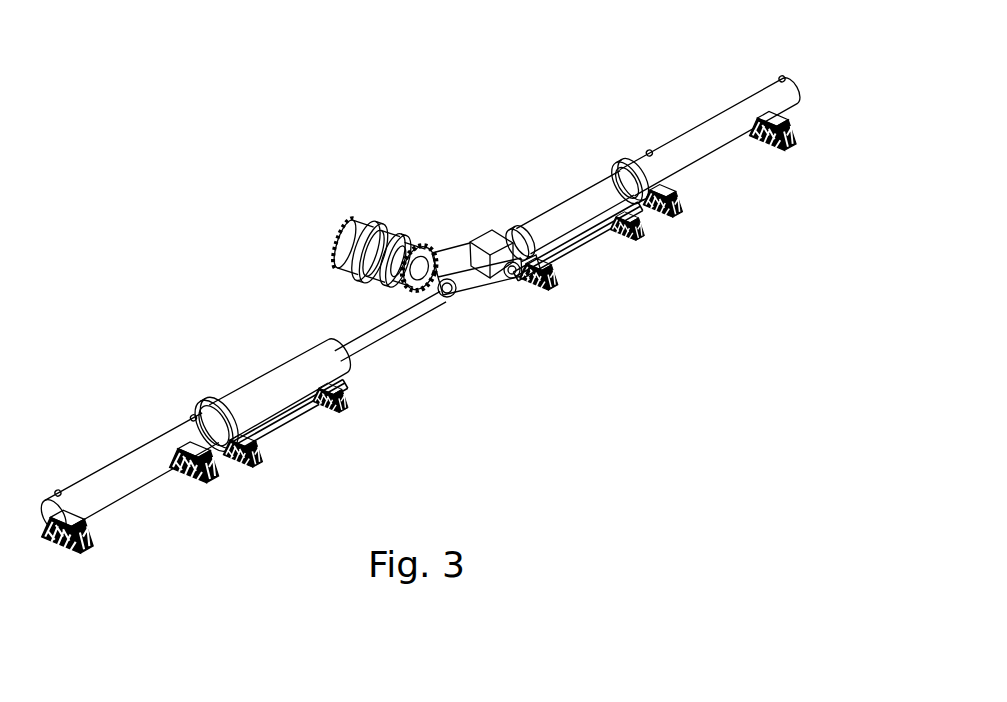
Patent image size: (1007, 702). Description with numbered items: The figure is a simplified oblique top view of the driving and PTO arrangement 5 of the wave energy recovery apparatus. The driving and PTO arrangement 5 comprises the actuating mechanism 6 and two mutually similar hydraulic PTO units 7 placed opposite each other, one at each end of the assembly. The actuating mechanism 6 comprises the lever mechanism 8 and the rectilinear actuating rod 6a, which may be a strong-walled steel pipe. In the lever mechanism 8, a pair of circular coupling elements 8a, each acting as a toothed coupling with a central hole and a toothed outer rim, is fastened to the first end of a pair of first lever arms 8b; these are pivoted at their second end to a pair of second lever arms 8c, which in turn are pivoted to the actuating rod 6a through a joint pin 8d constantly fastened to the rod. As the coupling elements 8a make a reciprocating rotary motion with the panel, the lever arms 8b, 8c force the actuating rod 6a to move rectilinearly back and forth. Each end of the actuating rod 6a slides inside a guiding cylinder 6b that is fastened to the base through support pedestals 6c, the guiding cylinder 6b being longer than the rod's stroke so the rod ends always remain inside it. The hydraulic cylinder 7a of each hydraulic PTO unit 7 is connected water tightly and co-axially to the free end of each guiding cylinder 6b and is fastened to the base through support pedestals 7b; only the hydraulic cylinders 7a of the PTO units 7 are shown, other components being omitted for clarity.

The driving and PTO arrangement 5 is at (288, 160).
The actuating mechanism 6 is at (436, 188).
The actuating rod 6a is at (350, 325).
The guiding cylinder 6b is at (581, 198).
The support pedestal 6c is at (343, 412).
The hydraulic PTO unit 7 is at (678, 82).
The hydraulic cylinder 7a is at (755, 98).
The support pedestal 7b is at (797, 140).
The lever mechanism 8 is at (466, 318).
The circular coupling element 8a is at (358, 212).
The first lever arm 8b is at (430, 300).
The second lever arm 8c is at (455, 262).
The joint pin 8d is at (514, 288).